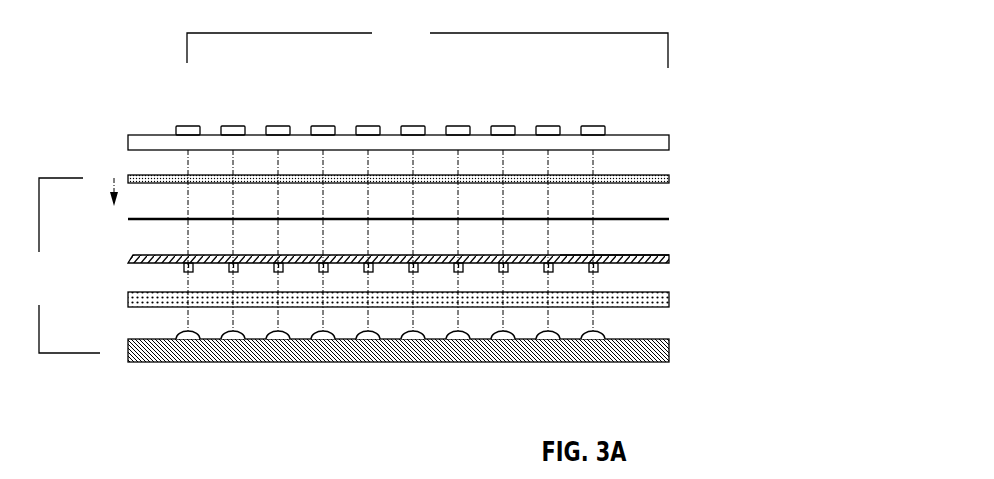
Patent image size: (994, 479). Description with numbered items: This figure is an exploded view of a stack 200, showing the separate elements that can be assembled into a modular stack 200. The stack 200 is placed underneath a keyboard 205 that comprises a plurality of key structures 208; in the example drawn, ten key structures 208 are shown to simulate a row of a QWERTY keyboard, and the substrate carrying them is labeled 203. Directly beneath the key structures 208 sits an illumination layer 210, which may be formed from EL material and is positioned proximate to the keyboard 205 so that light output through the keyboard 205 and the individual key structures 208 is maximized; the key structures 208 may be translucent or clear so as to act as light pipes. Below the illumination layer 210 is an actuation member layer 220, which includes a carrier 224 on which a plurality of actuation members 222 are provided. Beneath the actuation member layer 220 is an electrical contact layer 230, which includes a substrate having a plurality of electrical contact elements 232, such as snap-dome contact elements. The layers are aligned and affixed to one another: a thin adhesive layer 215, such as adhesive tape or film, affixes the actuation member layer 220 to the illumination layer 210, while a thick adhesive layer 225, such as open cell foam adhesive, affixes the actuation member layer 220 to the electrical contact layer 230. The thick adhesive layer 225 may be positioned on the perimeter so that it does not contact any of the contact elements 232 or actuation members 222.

The stack 200 is at (55, 265).
The substrate 203 is at (671, 139).
The keyboard 205 is at (427, 44).
The key structures 208 is at (557, 125).
The illumination layer 210 is at (644, 172).
The thin adhesive layer 215 is at (632, 217).
The actuation member layer 220 is at (667, 253).
The actuation members 222 is at (598, 270).
The carrier 224 is at (609, 256).
The thick adhesive layer 225 is at (655, 292).
The electrical contact layer 230 is at (643, 336).
The electrical contact elements 232 is at (460, 337).